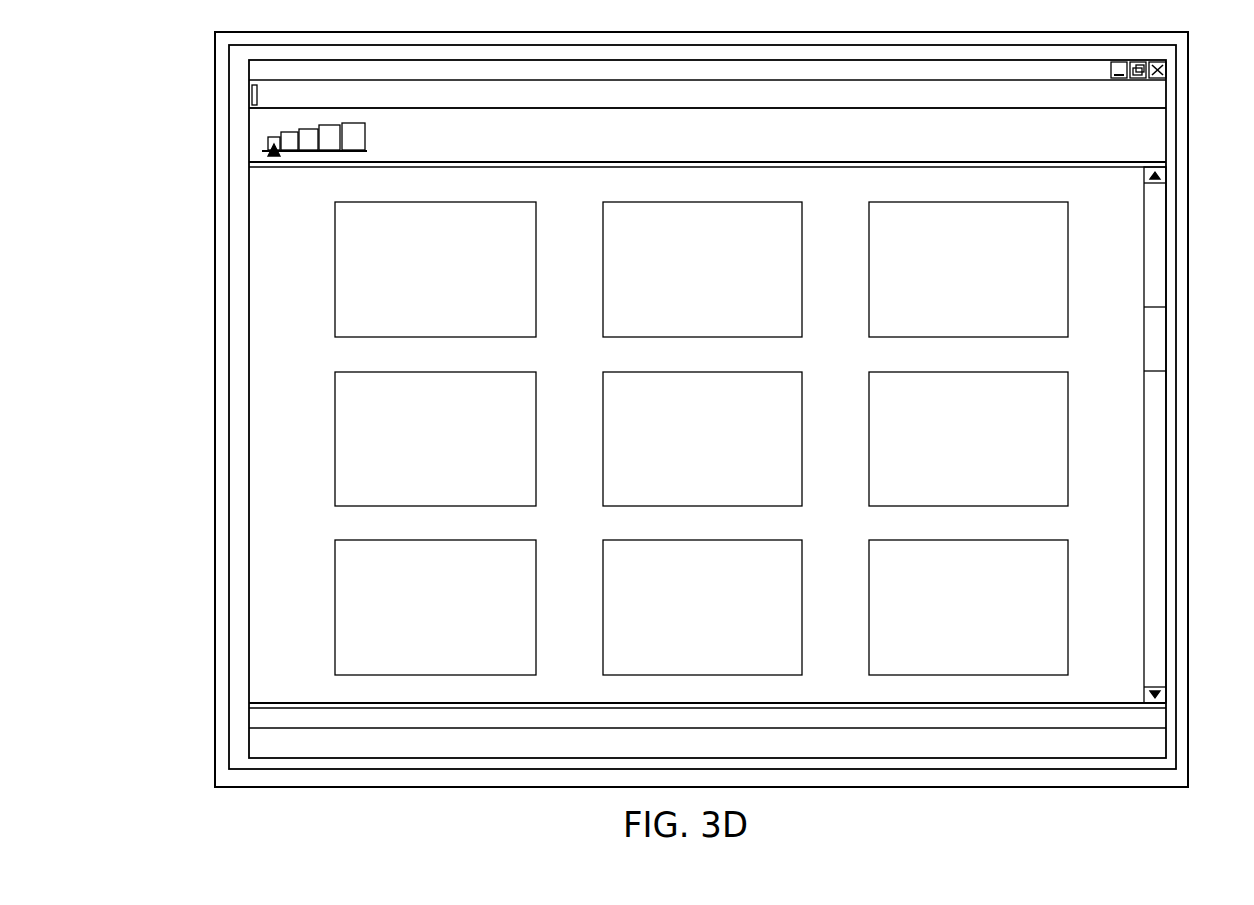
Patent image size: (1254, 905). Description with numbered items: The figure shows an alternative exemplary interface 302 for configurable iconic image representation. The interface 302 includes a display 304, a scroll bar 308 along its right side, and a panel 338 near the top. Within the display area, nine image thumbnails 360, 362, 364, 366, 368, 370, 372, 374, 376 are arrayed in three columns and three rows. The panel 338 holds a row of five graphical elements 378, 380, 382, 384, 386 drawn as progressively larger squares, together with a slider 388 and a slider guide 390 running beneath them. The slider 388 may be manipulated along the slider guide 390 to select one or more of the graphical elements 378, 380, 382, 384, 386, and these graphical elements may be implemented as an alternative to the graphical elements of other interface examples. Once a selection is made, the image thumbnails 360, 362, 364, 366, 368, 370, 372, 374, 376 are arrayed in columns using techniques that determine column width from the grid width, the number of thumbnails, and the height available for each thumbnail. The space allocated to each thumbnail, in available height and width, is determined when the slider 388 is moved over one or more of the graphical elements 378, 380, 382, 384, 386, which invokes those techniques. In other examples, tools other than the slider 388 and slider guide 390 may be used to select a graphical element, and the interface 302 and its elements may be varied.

The interface 302 is at (215, 213).
The display 304 is at (248, 480).
The scroll bar 308 is at (1155, 345).
The panel 338 is at (661, 143).
The image thumbnail 360 is at (455, 280).
The image thumbnail 362 is at (722, 280).
The image thumbnail 364 is at (988, 280).
The image thumbnail 366 is at (455, 449).
The image thumbnail 368 is at (722, 449).
The image thumbnail 370 is at (988, 449).
The image thumbnail 372 is at (455, 618).
The image thumbnail 374 is at (722, 618).
The image thumbnail 376 is at (988, 618).
The graphical element 378 is at (268, 144).
The graphical element 380 is at (285, 132).
The graphical element 382 is at (311, 129).
The graphical element 384 is at (330, 125).
The graphical element 386 is at (366, 137).
The slider 388 is at (275, 157).
The slider guide 390 is at (308, 152).